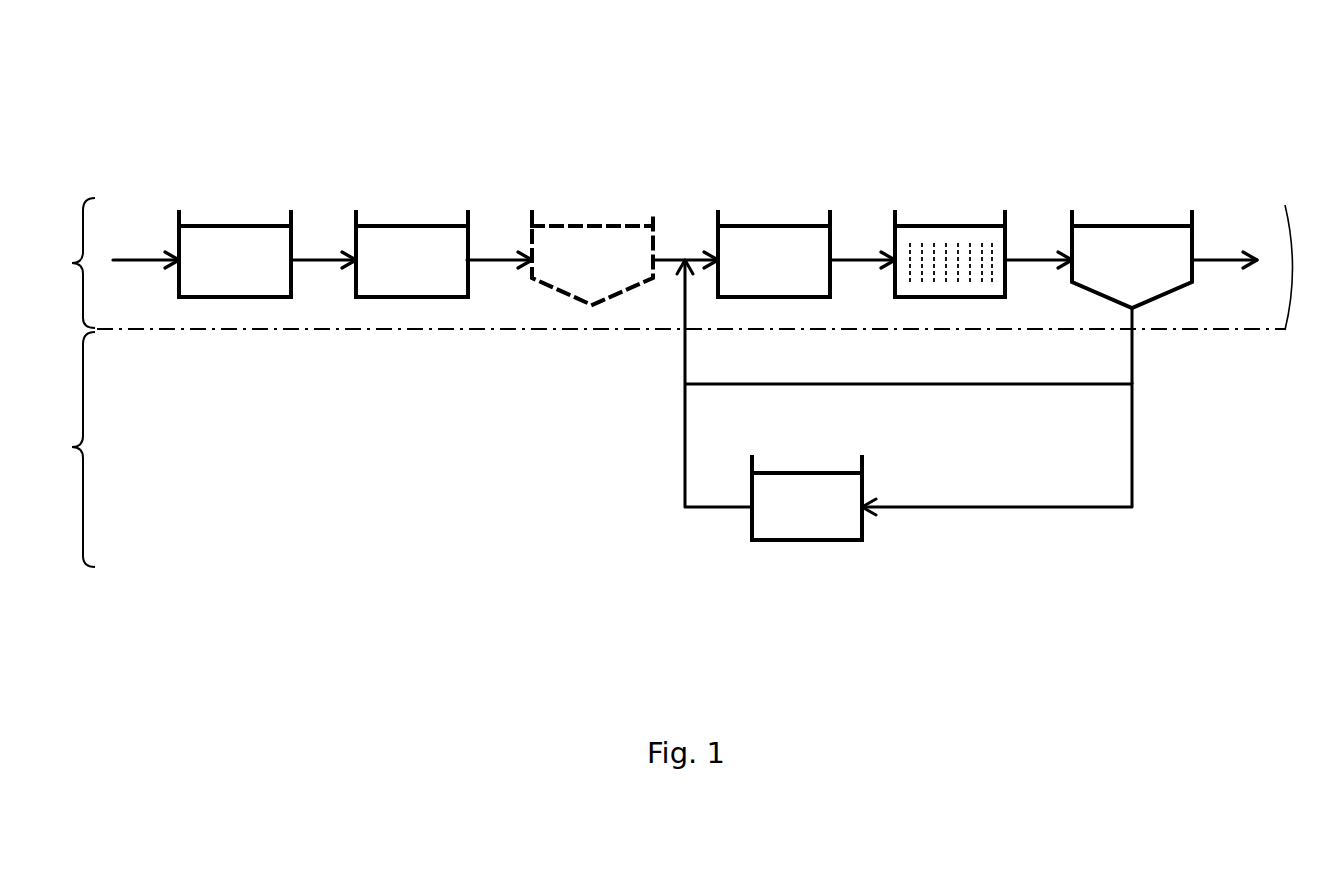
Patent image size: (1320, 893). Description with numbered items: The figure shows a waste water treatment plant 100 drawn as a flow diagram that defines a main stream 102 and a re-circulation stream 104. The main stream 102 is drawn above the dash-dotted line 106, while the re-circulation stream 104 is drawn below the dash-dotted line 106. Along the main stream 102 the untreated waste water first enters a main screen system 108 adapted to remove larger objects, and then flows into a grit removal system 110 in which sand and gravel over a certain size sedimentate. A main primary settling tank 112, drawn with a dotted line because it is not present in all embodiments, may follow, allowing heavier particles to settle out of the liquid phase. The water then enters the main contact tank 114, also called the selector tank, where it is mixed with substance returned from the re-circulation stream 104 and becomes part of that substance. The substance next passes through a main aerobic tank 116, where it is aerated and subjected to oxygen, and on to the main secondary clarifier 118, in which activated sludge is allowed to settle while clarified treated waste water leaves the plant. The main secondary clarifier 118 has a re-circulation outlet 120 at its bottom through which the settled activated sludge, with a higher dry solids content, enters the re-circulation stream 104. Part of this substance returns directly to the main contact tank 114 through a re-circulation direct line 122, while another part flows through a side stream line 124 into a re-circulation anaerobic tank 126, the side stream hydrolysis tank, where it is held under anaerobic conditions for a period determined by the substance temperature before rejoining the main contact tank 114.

The waste water treatment plant 100 is at (598, 102).
The main stream 102 is at (72, 264).
The re-circulation stream 104 is at (72, 448).
The dash-dotted line 106 is at (1277, 256).
The main screen system 108 is at (216, 272).
The grit removal system 110 is at (392, 272).
The main primary settling tank 112 is at (573, 272).
The main contact tank 114 is at (755, 272).
The main aerobic tank 116 is at (903, 235).
The main secondary clarifier 118 is at (1113, 272).
The re-circulation outlet 120 is at (1135, 309).
The re-circulation direct line 122 is at (972, 386).
The side stream line 124 is at (958, 509).
The re-circulation anaerobic tank 126 is at (788, 516).